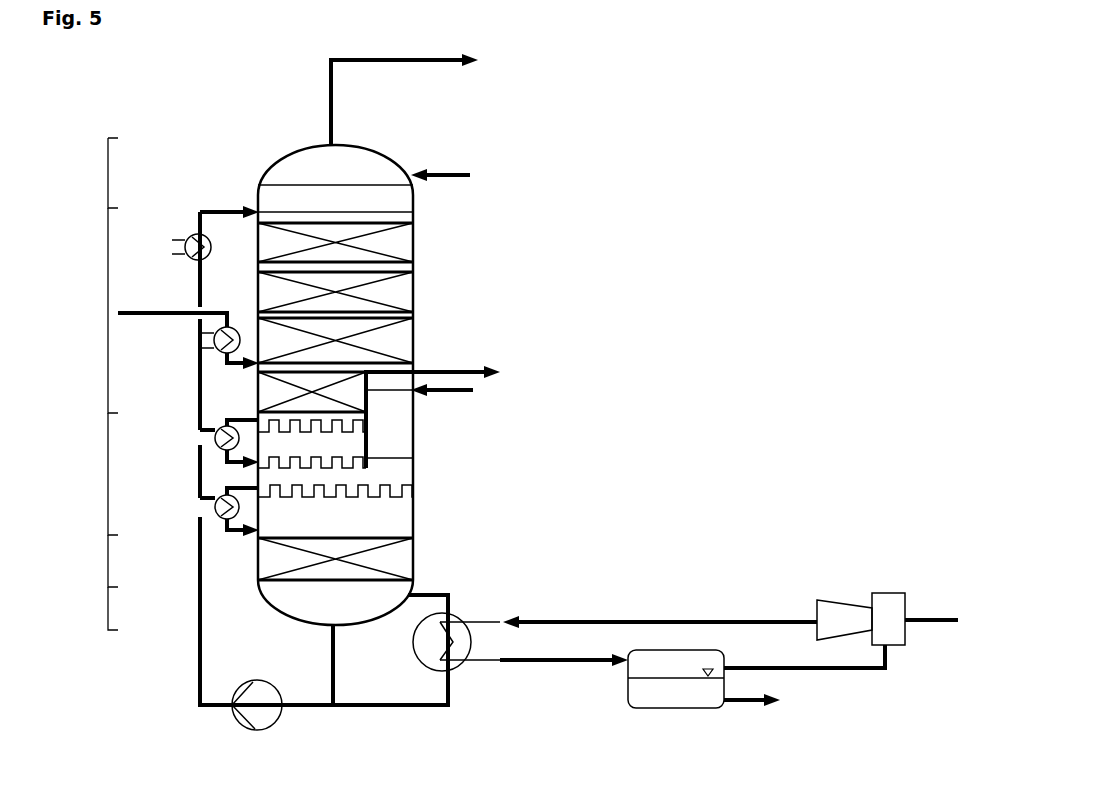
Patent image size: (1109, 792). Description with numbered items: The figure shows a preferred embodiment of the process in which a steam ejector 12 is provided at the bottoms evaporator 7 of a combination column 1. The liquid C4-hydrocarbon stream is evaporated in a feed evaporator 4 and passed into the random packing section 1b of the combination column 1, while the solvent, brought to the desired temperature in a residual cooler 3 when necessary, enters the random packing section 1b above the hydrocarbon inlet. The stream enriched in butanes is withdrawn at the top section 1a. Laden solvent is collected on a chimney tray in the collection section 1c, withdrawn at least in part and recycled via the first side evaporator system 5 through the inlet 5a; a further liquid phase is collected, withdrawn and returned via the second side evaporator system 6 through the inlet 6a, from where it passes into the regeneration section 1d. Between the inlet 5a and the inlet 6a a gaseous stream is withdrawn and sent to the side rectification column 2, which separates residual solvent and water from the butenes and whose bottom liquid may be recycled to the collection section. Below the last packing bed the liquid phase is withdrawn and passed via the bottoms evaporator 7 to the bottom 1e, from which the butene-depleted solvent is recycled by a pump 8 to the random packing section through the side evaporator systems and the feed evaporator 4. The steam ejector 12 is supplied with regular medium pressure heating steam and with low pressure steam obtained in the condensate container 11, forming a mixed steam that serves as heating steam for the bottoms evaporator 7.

The combination column 1 is at (335, 385).
The top section 1a is at (106, 178).
The random packing section 1b is at (106, 313).
The collection section 1c is at (106, 477).
The regeneration section 1d is at (106, 562).
The bottom 1e is at (106, 610).
The side rectification column 2 is at (433, 417).
The residual cooler 3 is at (214, 233).
The feed evaporator 4 is at (188, 340).
The first side evaporator system 5 is at (231, 430).
The inlet 5a is at (245, 466).
The second side evaporator system 6 is at (216, 509).
The inlet 6a is at (255, 536).
The bottoms evaporator 7 is at (615, 630).
The pump 8 is at (257, 689).
The condensate container 11 is at (740, 680).
The steam ejector 12 is at (887, 600).